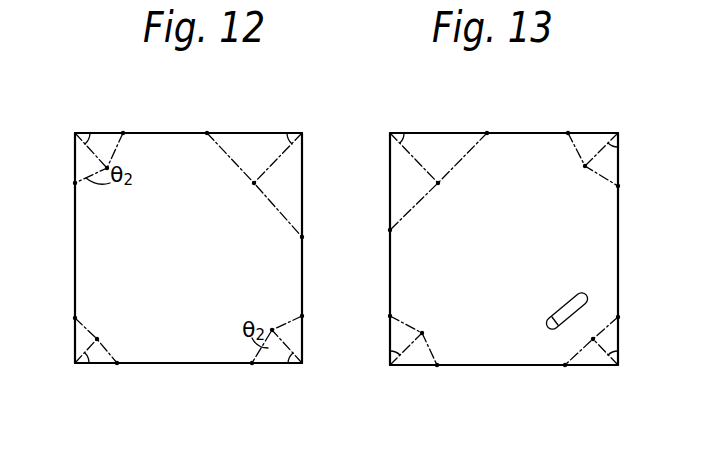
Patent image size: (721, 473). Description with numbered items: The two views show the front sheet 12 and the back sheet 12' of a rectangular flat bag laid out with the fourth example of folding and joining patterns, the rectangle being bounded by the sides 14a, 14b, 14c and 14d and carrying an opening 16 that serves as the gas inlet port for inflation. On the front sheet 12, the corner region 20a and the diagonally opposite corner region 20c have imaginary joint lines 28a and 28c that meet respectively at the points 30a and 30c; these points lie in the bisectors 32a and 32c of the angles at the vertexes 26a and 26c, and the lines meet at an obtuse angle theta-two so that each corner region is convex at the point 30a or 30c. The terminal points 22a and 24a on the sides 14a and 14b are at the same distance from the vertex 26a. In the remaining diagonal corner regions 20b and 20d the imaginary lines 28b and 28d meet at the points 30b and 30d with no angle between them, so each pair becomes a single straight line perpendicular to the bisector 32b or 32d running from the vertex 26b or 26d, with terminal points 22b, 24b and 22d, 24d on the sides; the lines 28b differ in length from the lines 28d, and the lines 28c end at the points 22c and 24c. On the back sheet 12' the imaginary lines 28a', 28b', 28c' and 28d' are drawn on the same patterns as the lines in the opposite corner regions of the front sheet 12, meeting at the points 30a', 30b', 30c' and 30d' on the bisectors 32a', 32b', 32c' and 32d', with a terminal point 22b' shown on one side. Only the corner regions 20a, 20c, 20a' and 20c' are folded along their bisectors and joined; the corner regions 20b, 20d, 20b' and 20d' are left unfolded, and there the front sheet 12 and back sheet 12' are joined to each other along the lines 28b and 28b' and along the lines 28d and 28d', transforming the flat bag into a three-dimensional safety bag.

In FIG. 12, the front sheet 12 is at (188, 253).
In FIG. 13, the back sheet 12' is at (504, 252).
In FIG. 12, the side 14a is at (77, 252).
In FIG. 13, the side 14a is at (618, 248).
In FIG. 12, the side 14b is at (172, 133).
In FIG. 13, the side 14b is at (520, 133).
In FIG. 12, the side 14c is at (302, 262).
In FIG. 13, the side 14c is at (390, 265).
In FIG. 12, the side 14d is at (186, 364).
In FIG. 13, the side 14d is at (500, 366).
In FIG. 13, the opening 16 is at (558, 315).
In FIG. 12, the corner region 20a is at (99, 127).
In FIG. 12, the corner region 20b is at (235, 175).
In FIG. 12, the corner region 20c is at (255, 319).
In FIG. 12, the corner region 20d is at (64, 339).
In FIG. 13, the corner region 20a' is at (567, 173).
In FIG. 13, the corner region 20b' is at (390, 159).
In FIG. 13, the corner region 20c' is at (416, 384).
In FIG. 13, the corner region 20d' is at (624, 395).
In FIG. 12, the terminal point 22a is at (76, 183).
In FIG. 13, the terminal point 22a is at (619, 187).
In FIG. 12, the terminal point 22b is at (329, 232).
In FIG. 12, the terminal point 22c is at (302, 316).
In FIG. 13, the terminal point 22c is at (390, 316).
In FIG. 12, the terminal point 22d is at (75, 318).
In FIG. 13, the terminal point 22d is at (618, 317).
In FIG. 13, the terminal point 22b' is at (370, 203).
In FIG. 12, the terminal point 24a is at (123, 133).
In FIG. 13, the terminal point 24a is at (568, 133).
In FIG. 12, the terminal point 24b is at (207, 133).
In FIG. 13, the terminal point 24b is at (487, 133).
In FIG. 12, the terminal point 24c is at (252, 364).
In FIG. 13, the terminal point 24c is at (437, 366).
In FIG. 12, the terminal point 24d is at (117, 364).
In FIG. 13, the terminal point 24d is at (565, 366).
In FIG. 12, the vertex 26a is at (75, 133).
In FIG. 13, the vertex 26a is at (618, 133).
In FIG. 12, the vertex 26b is at (302, 133).
In FIG. 13, the vertex 26b is at (390, 133).
In FIG. 12, the vertex 26c is at (303, 364).
In FIG. 13, the vertex 26c is at (390, 366).
In FIG. 12, the vertex 26d is at (75, 364).
In FIG. 13, the vertex 26d is at (618, 366).
In FIG. 12, the joint line 28a is at (130, 179).
In FIG. 12, the joint line 28b is at (274, 185).
In FIG. 12, the joint line 28c is at (306, 366).
In FIG. 12, the joint line 28d is at (125, 354).
In FIG. 13, the joint line 28a' is at (598, 159).
In FIG. 13, the joint line 28b' is at (457, 189).
In FIG. 13, the joint line 28c' is at (447, 331).
In FIG. 13, the joint line 28d' is at (596, 323).
In FIG. 12, the point 30a is at (142, 174).
In FIG. 12, the point 30b is at (244, 204).
In FIG. 12, the point 30c is at (235, 329).
In FIG. 12, the point 30d is at (131, 332).
In FIG. 13, the point 30a' is at (591, 188).
In FIG. 13, the point 30b' is at (468, 197).
In FIG. 13, the point 30c' is at (457, 329).
In FIG. 13, the point 30d' is at (566, 389).
In FIG. 12, the bisector 32a is at (60, 134).
In FIG. 12, the bisector 32b is at (283, 165).
In FIG. 12, the bisector 32c is at (325, 385).
In FIG. 12, the bisector 32d is at (67, 382).
In FIG. 13, the bisector 32a' is at (644, 142).
In FIG. 13, the bisector 32b' is at (433, 151).
In FIG. 13, the bisector 32c' is at (360, 359).
In FIG. 13, the bisector 32d' is at (644, 364).